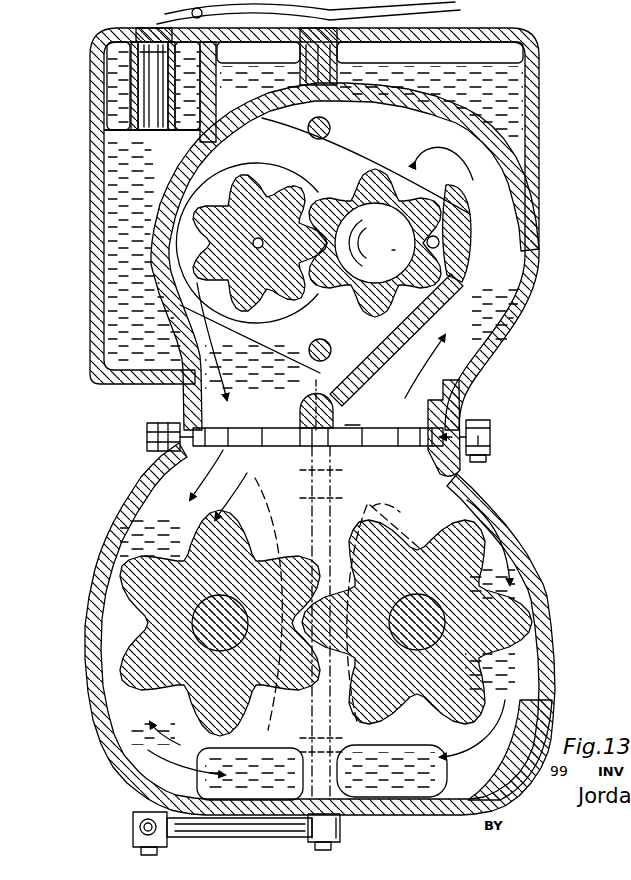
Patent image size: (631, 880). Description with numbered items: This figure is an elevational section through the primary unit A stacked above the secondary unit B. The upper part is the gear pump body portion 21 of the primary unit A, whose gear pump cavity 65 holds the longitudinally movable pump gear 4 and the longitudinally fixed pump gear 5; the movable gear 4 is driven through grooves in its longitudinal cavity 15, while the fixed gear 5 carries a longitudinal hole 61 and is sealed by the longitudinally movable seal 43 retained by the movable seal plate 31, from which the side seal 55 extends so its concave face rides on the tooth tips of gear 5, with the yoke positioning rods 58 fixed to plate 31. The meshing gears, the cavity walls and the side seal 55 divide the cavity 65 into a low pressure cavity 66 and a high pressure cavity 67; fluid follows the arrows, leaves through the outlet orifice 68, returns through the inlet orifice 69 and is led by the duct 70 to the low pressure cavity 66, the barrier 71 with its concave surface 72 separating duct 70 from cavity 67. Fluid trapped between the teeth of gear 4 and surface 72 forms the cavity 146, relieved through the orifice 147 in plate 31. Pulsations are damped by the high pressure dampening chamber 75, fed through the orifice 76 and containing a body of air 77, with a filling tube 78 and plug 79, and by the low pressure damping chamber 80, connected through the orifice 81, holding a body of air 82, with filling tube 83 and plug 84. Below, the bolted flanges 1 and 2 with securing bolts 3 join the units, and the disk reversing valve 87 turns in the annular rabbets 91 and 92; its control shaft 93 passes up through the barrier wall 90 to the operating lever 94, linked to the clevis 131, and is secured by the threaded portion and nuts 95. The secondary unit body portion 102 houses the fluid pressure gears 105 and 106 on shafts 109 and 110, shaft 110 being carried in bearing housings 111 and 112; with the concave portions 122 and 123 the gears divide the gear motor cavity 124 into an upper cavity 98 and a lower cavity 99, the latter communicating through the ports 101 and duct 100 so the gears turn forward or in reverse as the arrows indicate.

The bolted flange 1 is at (487, 424).
The bolted flange 2 is at (488, 448).
The securing bolt 3 is at (476, 454).
The longitudinally movable pump gear 4 is at (380, 183).
The longitudinally fixed pump gear 5 is at (275, 217).
The longitudinal cavity 15 is at (405, 246).
The gear pump body portion 21 is at (540, 252).
The movable seal plate 31 is at (340, 140).
The longitudinally movable seal 43 is at (262, 180).
The side seal 55 is at (173, 250).
The yoke positioning rod 58 is at (326, 345).
The longitudinal hole 61 is at (265, 243).
The gear pump cavity 65 is at (483, 148).
The low pressure cavity 66 is at (403, 132).
The high pressure cavity 67 is at (280, 380).
The outlet orifice 68 is at (285, 420).
The inlet orifice 69 is at (366, 415).
The duct 70 is at (488, 329).
The barrier 71 is at (375, 360).
The concave surface 72 is at (465, 270).
The high pressure dampening chamber 75 is at (165, 335).
The orifice 76 is at (178, 372).
The body of air 77 is at (115, 88).
The filling tube 78 is at (133, 65).
The plug 79 is at (137, 30).
The low pressure damping chamber 80 is at (460, 83).
The orifice 81 is at (312, 92).
The body of air 82 is at (435, 47).
The filling tube 83 is at (337, 52).
The plug 84 is at (300, 45).
The reversing valve 87 is at (405, 442).
The barrier wall 90 is at (274, 478).
The annular rabbet 91 is at (448, 430).
The annular rabbet 92 is at (178, 452).
The control shaft 93 is at (330, 492).
The operating lever 94 is at (341, 834).
The threaded portion and nuts 95 is at (338, 410).
The upper cavity 98 is at (462, 496).
The lower cavity 99 is at (428, 760).
The duct 100 is at (107, 528).
The port 101 is at (412, 774).
The secondary unit body portion 102 is at (546, 578).
The fluid pressure gear 105 is at (205, 579).
The fluid pressure gear 106 is at (386, 571).
The shaft 109 is at (224, 652).
The shaft 110 is at (415, 660).
The bearing housing 111 is at (398, 511).
The bearing housing 112 is at (311, 601).
The concave portion 122 is at (95, 655).
The concave portion 123 is at (545, 600).
The gear motor cavity 124 is at (545, 655).
The clevis 131 is at (133, 838).
The cavity 146 is at (447, 255).
The orifice 147 is at (440, 241).
The primary unit A is at (541, 168).
The secondary unit B is at (522, 508).